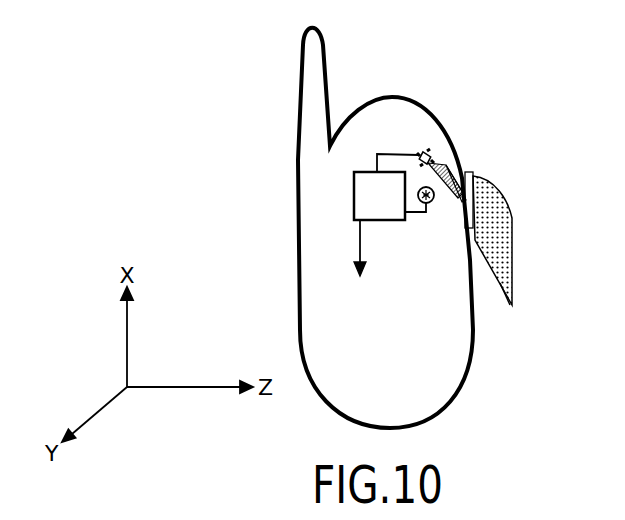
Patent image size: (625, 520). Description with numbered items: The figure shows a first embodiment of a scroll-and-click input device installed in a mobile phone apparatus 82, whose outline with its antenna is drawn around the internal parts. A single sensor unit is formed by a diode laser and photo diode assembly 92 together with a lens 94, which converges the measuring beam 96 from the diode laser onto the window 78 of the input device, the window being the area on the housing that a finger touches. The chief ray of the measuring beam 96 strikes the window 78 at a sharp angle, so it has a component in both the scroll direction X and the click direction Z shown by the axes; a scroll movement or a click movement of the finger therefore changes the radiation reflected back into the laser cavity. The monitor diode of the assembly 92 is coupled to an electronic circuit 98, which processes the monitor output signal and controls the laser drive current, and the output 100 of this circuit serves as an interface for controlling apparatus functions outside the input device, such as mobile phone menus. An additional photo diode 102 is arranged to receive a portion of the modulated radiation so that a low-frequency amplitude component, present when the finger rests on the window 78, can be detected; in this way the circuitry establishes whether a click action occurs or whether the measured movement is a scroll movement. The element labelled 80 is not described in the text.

The window 78 is at (472, 177).
The lens outer surface 80 is at (512, 307).
The mobile phone apparatus 82 is at (297, 215).
The diode laser and photo diode assembly 92 is at (427, 155).
The lens 94 is at (440, 165).
The measuring beam 96 is at (453, 182).
The electronic circuit 98 is at (379, 196).
The output of the circuit 100 is at (360, 261).
The additional photo diode 102 is at (430, 212).